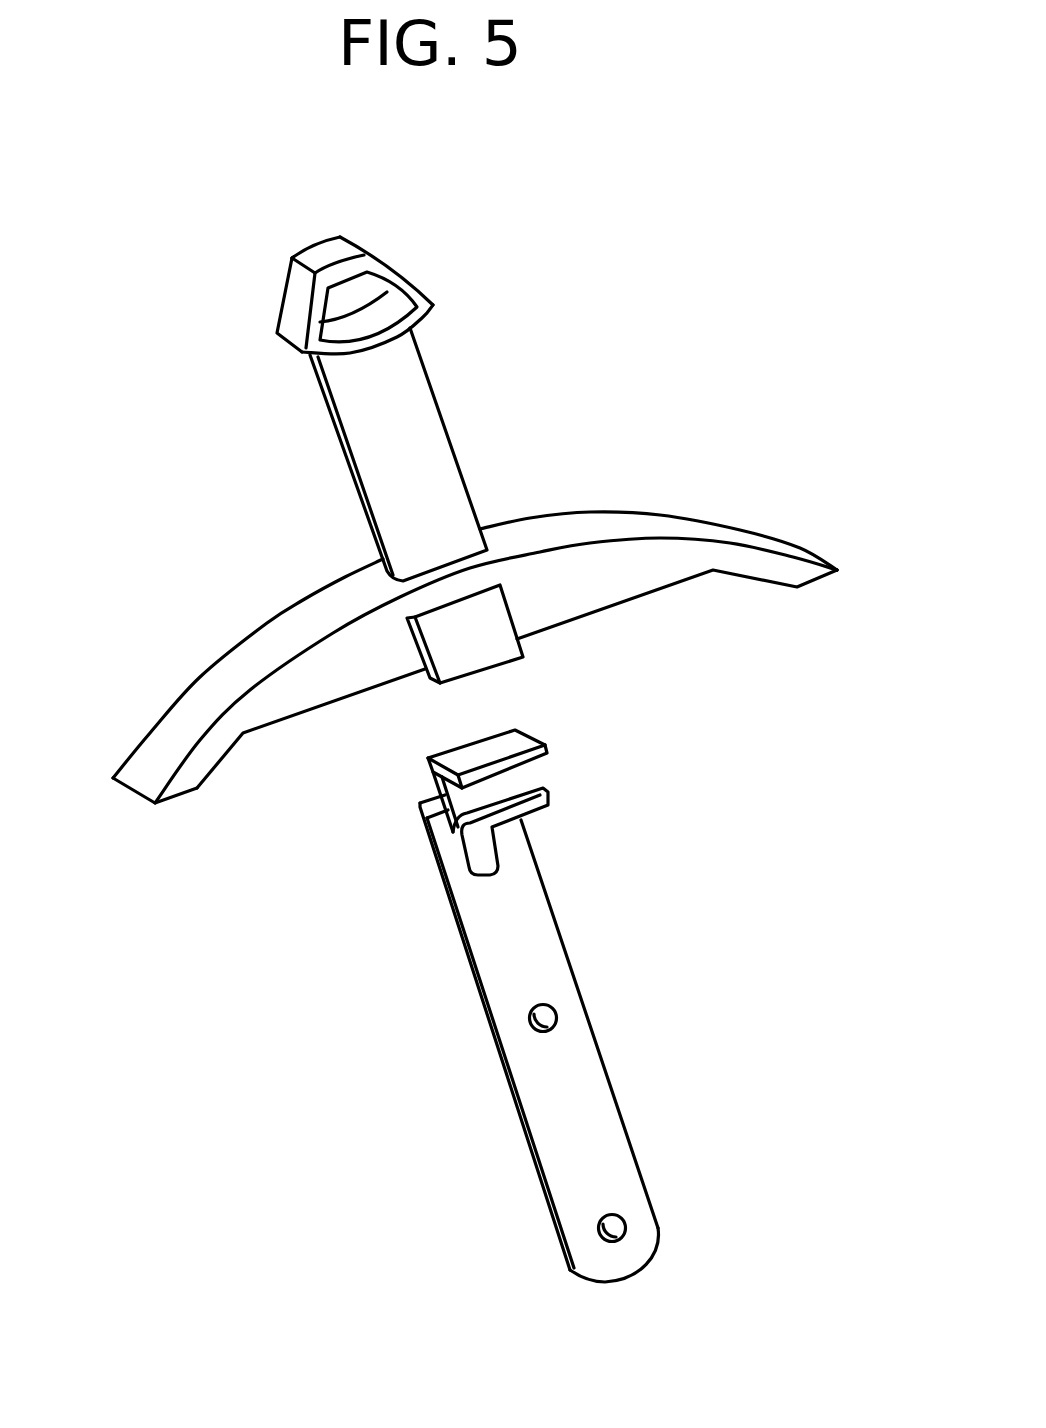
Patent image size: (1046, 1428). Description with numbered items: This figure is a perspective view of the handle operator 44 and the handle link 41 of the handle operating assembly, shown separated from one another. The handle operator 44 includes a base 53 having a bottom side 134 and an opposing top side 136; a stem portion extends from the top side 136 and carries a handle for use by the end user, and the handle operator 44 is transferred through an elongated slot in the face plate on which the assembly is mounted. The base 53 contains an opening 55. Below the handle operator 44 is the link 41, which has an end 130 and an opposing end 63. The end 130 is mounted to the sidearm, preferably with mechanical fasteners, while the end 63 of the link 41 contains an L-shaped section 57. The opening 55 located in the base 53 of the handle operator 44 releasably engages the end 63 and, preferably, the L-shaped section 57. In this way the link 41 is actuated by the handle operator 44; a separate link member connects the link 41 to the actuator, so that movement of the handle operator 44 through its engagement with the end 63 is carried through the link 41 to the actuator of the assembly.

The handle operator 44 is at (465, 483).
The base 53 is at (650, 560).
The opening 55 is at (471, 628).
The L-shaped section 57 is at (428, 781).
The end 63 is at (545, 744).
The handle link 41 is at (613, 1088).
The end 130 is at (660, 1233).
The bottom side 134 is at (303, 710).
The top side 136 is at (155, 753).